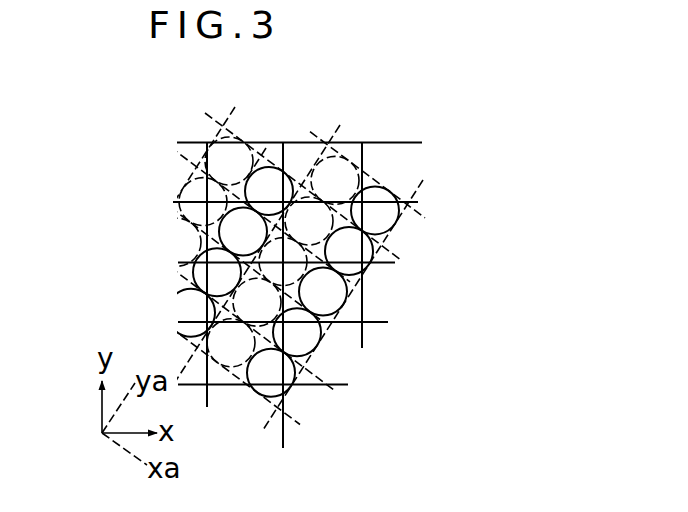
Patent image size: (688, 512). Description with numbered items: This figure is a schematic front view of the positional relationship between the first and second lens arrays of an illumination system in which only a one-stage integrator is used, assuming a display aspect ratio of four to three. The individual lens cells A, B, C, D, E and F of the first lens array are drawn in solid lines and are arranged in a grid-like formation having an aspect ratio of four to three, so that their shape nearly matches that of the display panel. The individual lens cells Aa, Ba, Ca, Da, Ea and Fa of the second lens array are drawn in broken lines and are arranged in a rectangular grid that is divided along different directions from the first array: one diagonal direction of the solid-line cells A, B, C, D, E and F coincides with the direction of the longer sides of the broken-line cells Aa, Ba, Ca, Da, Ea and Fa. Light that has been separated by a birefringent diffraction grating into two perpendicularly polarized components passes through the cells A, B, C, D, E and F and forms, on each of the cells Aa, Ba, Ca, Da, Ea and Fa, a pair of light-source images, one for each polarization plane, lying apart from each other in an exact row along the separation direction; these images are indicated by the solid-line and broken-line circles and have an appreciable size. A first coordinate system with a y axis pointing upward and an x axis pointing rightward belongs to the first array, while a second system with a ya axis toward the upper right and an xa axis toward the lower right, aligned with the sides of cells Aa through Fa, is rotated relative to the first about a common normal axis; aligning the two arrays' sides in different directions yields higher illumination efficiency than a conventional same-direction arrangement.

The lens cell A is at (349, 141).
The lens cell B is at (365, 280).
The lens cell C is at (345, 329).
The lens cell D is at (269, 141).
The lens cell E is at (202, 214).
The lens cell F is at (202, 306).
The lens cell Aa is at (399, 229).
The lens cell Ba is at (351, 265).
The lens cell Ca is at (347, 310).
The lens cell Da is at (216, 137).
The lens cell Ea is at (186, 185).
The lens cell Fa is at (256, 356).